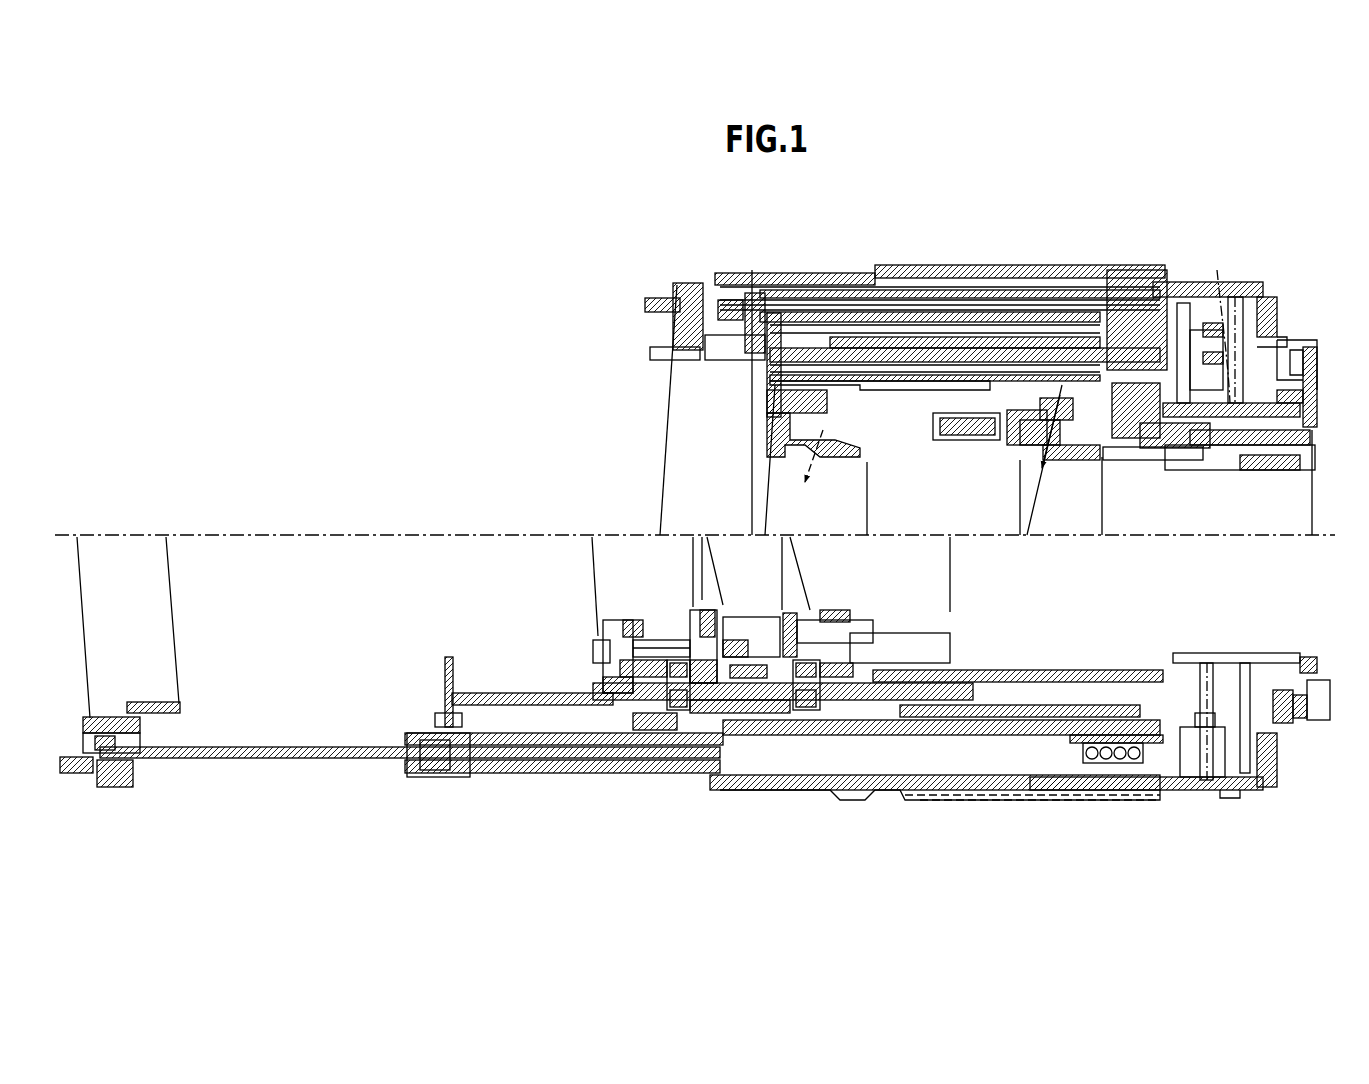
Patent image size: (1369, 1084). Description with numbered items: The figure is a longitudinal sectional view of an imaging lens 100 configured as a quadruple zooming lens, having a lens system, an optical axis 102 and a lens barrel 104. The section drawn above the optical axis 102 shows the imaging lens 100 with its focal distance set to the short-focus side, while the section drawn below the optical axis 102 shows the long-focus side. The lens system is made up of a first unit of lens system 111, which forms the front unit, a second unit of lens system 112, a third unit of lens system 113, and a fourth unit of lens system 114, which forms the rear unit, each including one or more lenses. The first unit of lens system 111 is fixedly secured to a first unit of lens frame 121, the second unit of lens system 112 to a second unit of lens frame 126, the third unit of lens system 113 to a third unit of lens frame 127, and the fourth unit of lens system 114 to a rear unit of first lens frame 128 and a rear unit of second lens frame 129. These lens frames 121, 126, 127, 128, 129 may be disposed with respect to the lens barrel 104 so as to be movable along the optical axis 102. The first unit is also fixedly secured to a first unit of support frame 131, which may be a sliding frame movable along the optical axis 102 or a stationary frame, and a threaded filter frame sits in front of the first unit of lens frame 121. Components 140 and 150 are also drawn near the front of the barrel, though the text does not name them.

The imaging lens 100 is at (326, 280).
The optical axis 102 is at (393, 535).
The lens barrel 104 is at (800, 290).
The first unit of lens system 111 is at (663, 402).
The second unit of lens system 112 is at (882, 268).
The third unit of lens system 113 is at (1032, 272).
The fourth unit of lens system 114 is at (1262, 505).
The first unit of lens frame 121 is at (672, 298).
The second unit of lens frame 126 is at (757, 310).
The third unit of lens frame 127 is at (1090, 292).
The rear unit of first lens frame 128 is at (1150, 285).
The rear unit of second lens frame 129 is at (1215, 290).
The first unit of support frame 131 is at (130, 758).
The front lens retaining member 140 is at (118, 790).
The front cover 150 is at (100, 785).